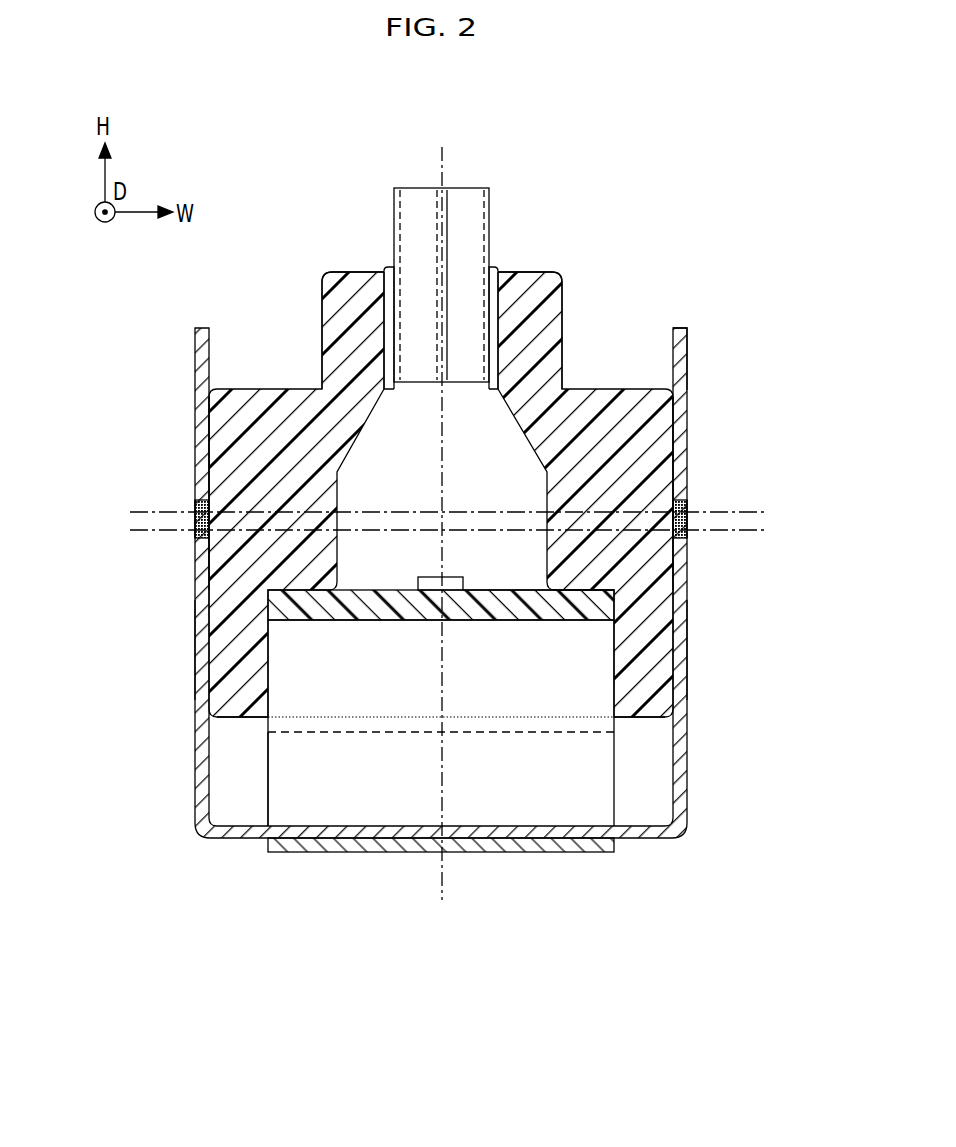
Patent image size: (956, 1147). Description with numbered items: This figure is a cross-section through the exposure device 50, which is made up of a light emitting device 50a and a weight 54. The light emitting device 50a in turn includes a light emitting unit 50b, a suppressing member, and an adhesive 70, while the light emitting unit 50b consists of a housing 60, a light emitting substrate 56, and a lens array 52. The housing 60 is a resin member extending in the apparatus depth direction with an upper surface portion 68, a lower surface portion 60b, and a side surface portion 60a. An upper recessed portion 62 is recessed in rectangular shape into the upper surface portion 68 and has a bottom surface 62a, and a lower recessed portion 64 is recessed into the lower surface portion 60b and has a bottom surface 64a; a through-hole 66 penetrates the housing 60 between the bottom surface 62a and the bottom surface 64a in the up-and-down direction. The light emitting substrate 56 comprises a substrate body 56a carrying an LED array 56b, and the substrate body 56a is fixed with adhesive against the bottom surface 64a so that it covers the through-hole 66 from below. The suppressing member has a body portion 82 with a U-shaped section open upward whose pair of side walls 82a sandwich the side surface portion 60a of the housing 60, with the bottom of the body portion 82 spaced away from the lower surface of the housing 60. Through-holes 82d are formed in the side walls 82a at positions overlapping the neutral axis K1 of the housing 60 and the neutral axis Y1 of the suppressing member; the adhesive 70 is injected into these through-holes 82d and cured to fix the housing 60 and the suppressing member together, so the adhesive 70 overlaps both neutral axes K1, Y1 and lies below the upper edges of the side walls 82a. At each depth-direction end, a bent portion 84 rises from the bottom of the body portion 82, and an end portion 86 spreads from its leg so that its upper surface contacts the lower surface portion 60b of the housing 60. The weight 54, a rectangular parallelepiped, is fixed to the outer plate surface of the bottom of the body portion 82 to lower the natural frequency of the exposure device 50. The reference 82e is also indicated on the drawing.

The exposure device 50 is at (425, 591).
The light emitting device 50a is at (424, 635).
The light emitting unit 50b is at (440, 478).
The lens array 52 is at (466, 187).
The weight 54 is at (560, 853).
The light emitting substrate 56 is at (345, 634).
The substrate body 56a is at (388, 622).
The LED array 56b is at (420, 579).
The housing 60 is at (556, 274).
The side surface portion 60a is at (209, 423).
The lower surface portion 60b is at (637, 717).
The upper recessed portion 62 is at (489, 276).
The bottom surface 62a is at (483, 390).
The lower recessed portion 64 is at (614, 648).
The bottom surface 64a is at (552, 603).
The through-hole 66 is at (508, 495).
The upper surface portion 68 is at (356, 272).
The adhesive 70 is at (195, 522).
The body portion 82 is at (686, 840).
The side walls 82a is at (200, 637).
The through-holes 82d is at (200, 508).
The upper end of case 82e is at (673, 352).
The bent portion 84 is at (268, 770).
The end portion 86 is at (268, 724).
The neutral axis K1 is at (752, 510).
The neutral axis Y1 is at (757, 533).